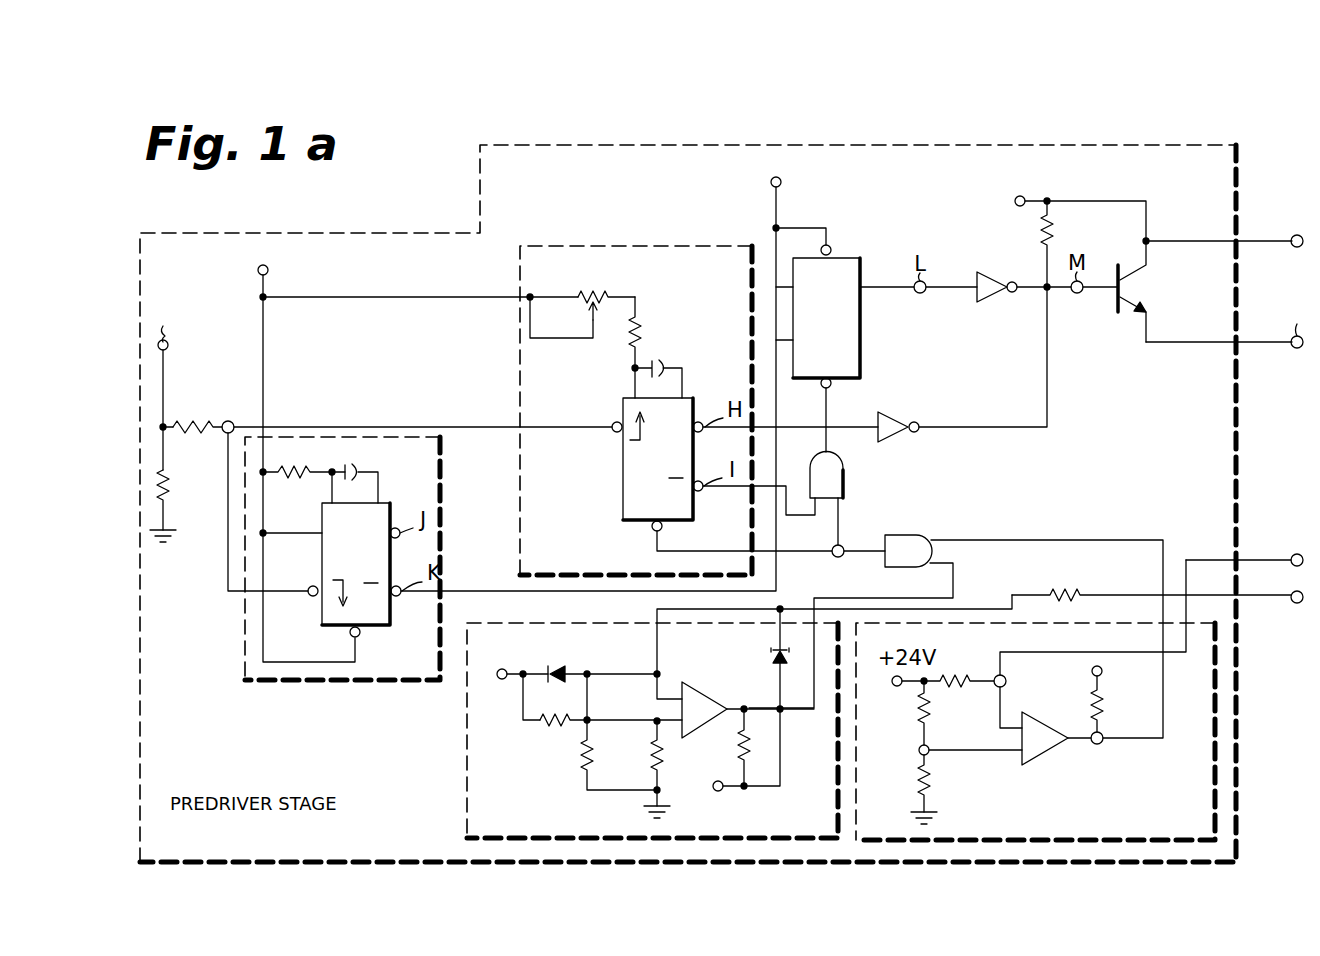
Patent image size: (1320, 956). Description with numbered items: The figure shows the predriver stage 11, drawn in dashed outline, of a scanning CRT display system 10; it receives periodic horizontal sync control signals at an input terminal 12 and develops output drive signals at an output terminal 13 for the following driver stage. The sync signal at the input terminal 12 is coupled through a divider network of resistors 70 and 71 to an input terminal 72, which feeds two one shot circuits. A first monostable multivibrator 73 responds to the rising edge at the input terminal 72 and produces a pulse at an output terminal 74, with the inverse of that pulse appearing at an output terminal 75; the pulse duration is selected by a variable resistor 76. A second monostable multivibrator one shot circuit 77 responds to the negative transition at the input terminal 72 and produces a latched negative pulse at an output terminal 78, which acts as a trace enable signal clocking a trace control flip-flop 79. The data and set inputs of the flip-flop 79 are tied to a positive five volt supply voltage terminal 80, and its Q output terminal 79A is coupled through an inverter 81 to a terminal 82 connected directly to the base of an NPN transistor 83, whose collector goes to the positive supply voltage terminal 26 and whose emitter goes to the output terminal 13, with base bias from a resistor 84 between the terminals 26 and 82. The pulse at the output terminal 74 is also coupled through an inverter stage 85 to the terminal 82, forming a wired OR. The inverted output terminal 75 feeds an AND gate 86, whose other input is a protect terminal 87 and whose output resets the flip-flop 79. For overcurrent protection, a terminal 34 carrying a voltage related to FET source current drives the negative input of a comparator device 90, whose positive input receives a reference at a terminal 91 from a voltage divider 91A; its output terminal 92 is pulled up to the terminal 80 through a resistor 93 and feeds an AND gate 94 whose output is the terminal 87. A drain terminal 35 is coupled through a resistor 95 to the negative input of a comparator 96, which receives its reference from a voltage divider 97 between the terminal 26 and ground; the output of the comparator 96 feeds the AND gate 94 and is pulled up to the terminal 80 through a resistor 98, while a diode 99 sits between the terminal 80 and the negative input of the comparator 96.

The scanning CRT display system 10 is at (372, 193).
The predriver stage 11 is at (648, 146).
The input terminal 12 is at (172, 345).
The output terminal 13 is at (1297, 348).
The positive supply voltage terminal 26 is at (1020, 206).
The terminal 34 is at (1297, 554).
The drain terminal 35 is at (1297, 603).
The resistor 70 is at (193, 422).
The resistor 71 is at (170, 490).
The input terminal 72 is at (223, 433).
The monostable multivibrator 73 is at (695, 246).
The output terminal 74 is at (701, 431).
The output terminal 75 is at (703, 491).
The variable resistor 76 is at (594, 293).
The monostable multivibrator one shot circuit 77 is at (442, 510).
The output terminal 78 is at (398, 596).
The trace control flip-flop 79 is at (862, 258).
The Q output terminal 79A is at (920, 293).
The positive 5 volt supply voltage terminal 80 is at (268, 272).
The inverter 81 is at (984, 301).
The terminal 82 is at (1077, 293).
The NPN transistor 83 is at (1136, 290).
The resistor 84 is at (1052, 239).
The inverter stage 85 is at (890, 412).
The AND gate 86 is at (847, 474).
The input terminal 87 is at (838, 557).
The comparator device 90 is at (1016, 763).
The terminal 91 is at (919, 750).
The voltage divider 91A is at (918, 717).
The terminal 92 is at (1097, 744).
The resistor 93 is at (1104, 706).
The AND gate 94 is at (911, 534).
The resistor 95 is at (1068, 590).
The comparator 96 is at (715, 702).
The voltage divider 97 is at (562, 727).
The resistor 98 is at (739, 745).
The diode 99 is at (772, 657).